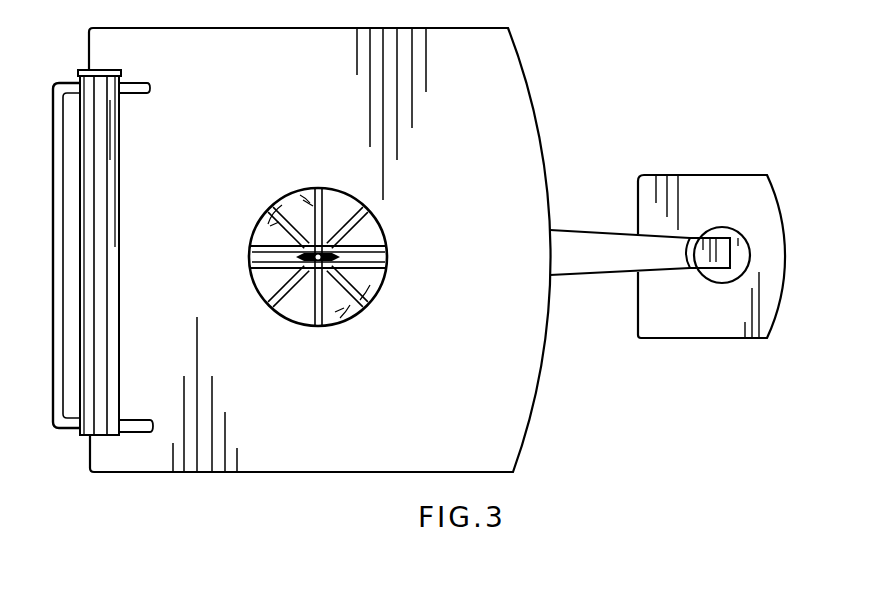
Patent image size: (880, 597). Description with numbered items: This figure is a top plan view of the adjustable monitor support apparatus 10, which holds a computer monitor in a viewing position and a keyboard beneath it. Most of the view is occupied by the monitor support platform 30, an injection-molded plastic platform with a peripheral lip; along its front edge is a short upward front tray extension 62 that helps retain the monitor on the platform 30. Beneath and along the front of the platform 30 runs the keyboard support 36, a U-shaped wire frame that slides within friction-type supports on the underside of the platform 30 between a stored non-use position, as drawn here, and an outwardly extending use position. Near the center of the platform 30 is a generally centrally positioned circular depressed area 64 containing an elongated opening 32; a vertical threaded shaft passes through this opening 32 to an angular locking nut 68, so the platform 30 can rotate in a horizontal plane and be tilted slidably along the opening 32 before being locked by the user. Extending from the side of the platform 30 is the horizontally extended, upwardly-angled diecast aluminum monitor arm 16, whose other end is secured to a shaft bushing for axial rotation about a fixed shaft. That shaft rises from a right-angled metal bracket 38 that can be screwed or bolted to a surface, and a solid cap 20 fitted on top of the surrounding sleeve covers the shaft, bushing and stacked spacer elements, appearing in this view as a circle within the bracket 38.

The adjustable monitor support apparatus 10 is at (58, 55).
The monitor support platform 30 is at (316, 391).
The keyboard support 36 is at (56, 197).
The front tray extension 62 is at (97, 438).
The circular depressed area 64 is at (370, 238).
The angular locking nut 68 is at (265, 256).
The elongated opening 32 is at (380, 257).
The monitor arm 16 is at (612, 263).
The right-angled metal bracket 38 is at (714, 328).
The solid cap 20 is at (738, 257).